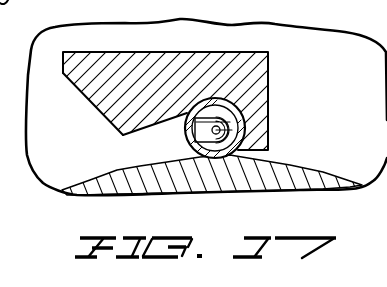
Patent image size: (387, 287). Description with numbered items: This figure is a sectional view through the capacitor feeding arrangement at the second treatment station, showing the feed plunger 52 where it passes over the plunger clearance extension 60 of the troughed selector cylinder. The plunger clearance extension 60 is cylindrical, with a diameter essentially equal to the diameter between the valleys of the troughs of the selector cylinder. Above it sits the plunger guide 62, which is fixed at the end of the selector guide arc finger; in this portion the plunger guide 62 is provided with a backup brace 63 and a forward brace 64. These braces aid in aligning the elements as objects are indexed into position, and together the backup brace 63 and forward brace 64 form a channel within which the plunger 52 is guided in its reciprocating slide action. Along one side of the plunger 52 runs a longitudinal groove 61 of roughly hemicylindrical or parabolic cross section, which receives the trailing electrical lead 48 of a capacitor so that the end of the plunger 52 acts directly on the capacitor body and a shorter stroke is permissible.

The electrical lead 48 is at (244, 119).
The feed plunger 52 is at (220, 158).
The plunger clearance extension 60 is at (135, 182).
The longitudinal groove 61 is at (185, 133).
The plunger guide 62 is at (248, 72).
The backup brace 63 is at (262, 135).
The forward brace 64 is at (130, 119).